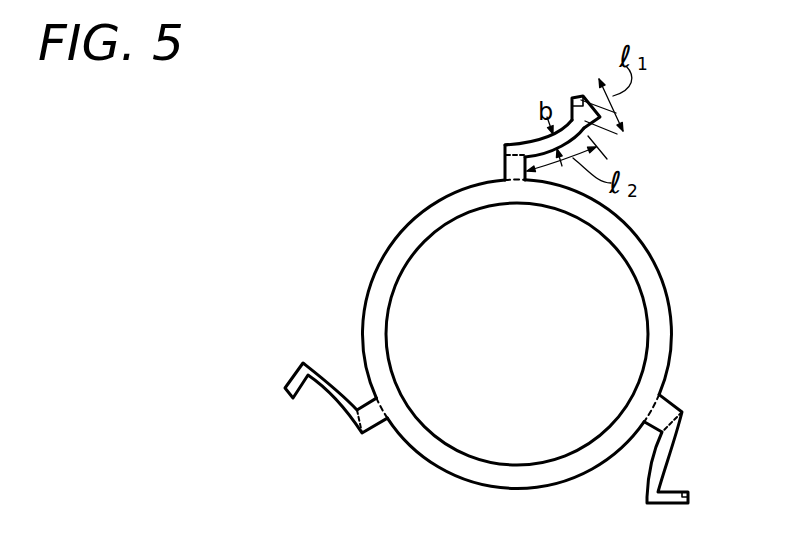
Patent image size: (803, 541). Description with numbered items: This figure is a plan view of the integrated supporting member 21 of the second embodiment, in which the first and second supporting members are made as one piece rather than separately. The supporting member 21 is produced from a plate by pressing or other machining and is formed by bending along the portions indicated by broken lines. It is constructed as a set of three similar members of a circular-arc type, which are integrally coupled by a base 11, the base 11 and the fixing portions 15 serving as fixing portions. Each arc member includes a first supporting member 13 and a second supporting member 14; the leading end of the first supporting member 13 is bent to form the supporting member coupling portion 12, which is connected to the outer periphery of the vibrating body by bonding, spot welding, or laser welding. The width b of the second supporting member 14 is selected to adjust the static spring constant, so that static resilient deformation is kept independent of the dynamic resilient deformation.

The base 11 is at (413, 230).
The supporting member coupling portion 12 is at (576, 96).
The first supporting member 13 is at (571, 114).
The second supporting member 14 is at (537, 143).
The fixing portion 15 is at (503, 167).
The supporting member 21 is at (506, 267).